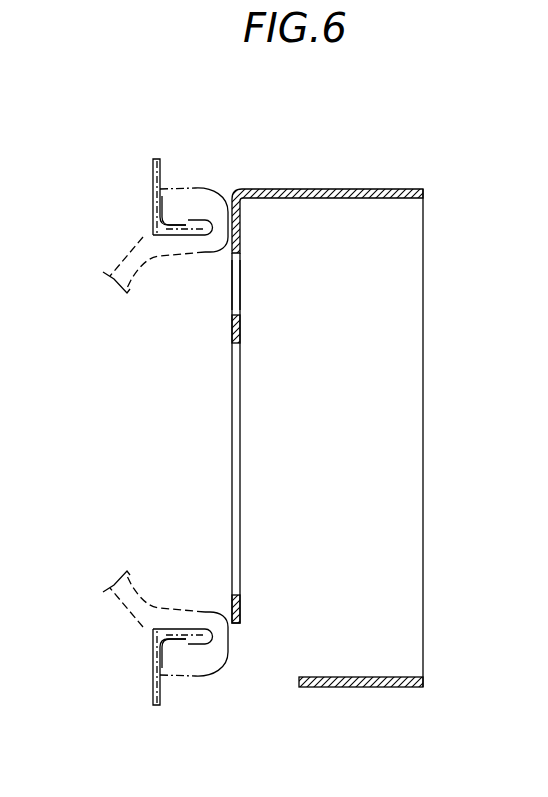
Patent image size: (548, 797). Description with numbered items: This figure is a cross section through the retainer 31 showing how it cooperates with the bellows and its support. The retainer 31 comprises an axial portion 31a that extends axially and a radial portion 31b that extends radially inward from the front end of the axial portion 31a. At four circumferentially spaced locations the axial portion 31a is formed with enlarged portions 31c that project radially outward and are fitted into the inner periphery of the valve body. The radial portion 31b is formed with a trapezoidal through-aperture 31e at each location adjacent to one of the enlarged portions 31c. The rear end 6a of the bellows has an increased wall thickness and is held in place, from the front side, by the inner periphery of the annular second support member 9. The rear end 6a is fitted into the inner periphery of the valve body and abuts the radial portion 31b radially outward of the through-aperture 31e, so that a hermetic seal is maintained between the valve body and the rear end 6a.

The retainer 31 is at (309, 453).
The axial portion 31a is at (350, 688).
The radial portion 31b is at (232, 327).
The enlarged portions 31c is at (318, 189).
The through-aperture 31e is at (240, 280).
The second support member 9 is at (153, 182).
The rear end of the bellows 6a is at (205, 188).